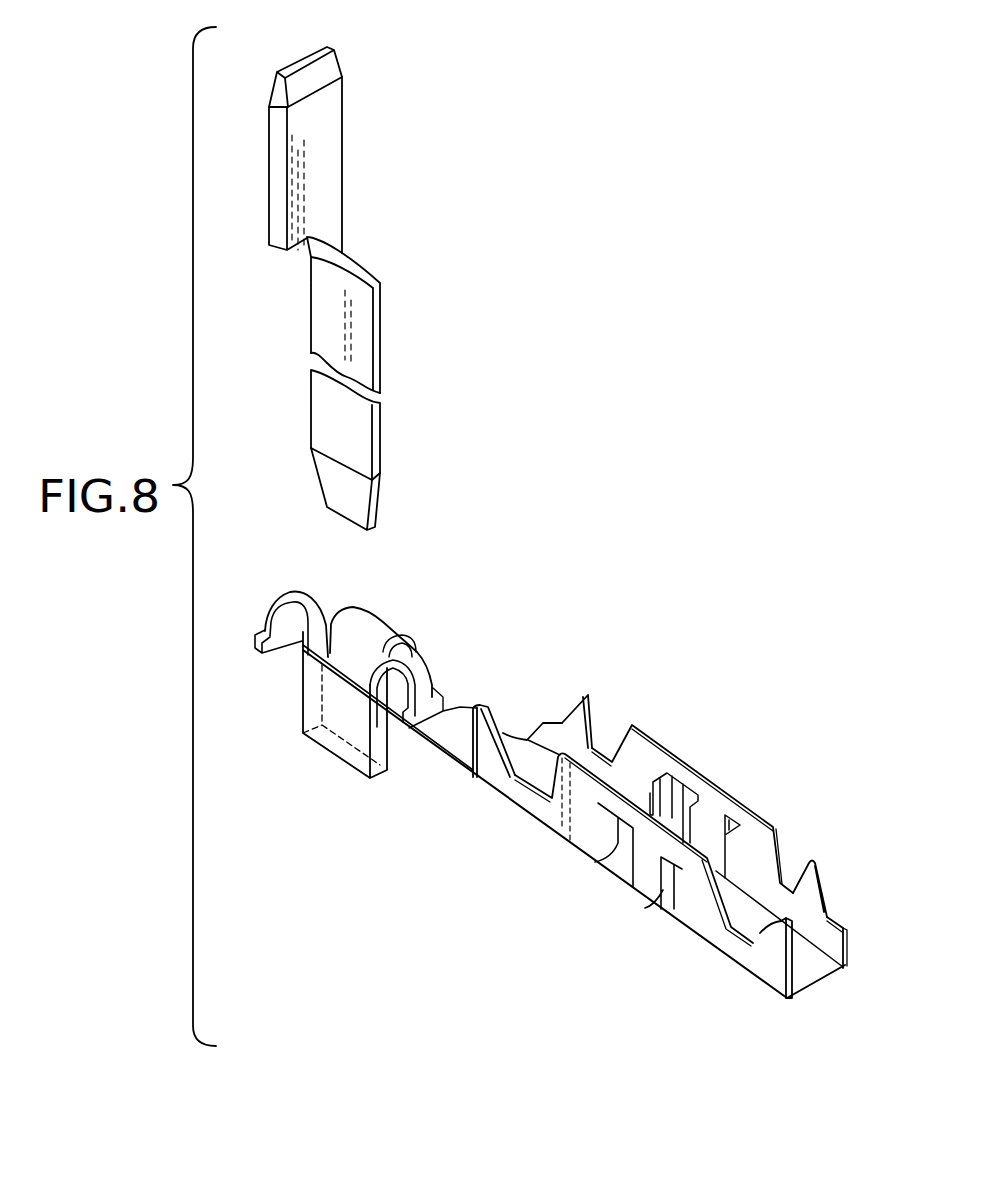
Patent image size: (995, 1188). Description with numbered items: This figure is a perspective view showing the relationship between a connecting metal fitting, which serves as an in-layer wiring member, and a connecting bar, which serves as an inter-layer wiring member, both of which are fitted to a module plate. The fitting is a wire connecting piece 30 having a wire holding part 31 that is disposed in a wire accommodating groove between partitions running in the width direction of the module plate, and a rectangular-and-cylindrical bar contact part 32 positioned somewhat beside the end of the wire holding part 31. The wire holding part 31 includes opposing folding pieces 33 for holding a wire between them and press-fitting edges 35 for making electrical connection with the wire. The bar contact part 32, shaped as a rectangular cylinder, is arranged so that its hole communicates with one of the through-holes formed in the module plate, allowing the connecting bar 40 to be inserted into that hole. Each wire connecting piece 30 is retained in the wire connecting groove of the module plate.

The wire connecting piece 30 is at (590, 795).
The wire holding part 31 is at (578, 874).
The bar contact part 32 is at (350, 784).
The folding pieces 33 is at (588, 695).
The press-fitting edges 35 is at (663, 797).
The connecting bar 40 is at (375, 338).